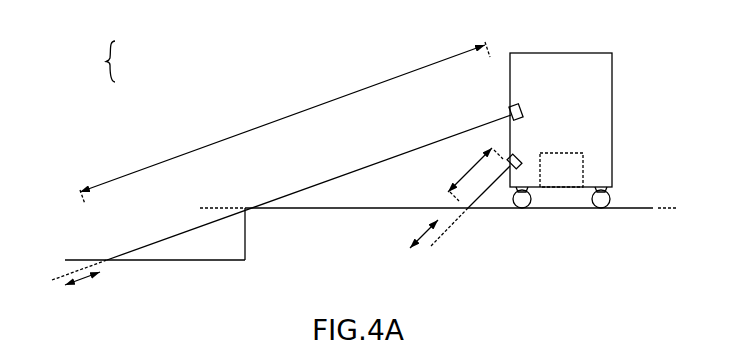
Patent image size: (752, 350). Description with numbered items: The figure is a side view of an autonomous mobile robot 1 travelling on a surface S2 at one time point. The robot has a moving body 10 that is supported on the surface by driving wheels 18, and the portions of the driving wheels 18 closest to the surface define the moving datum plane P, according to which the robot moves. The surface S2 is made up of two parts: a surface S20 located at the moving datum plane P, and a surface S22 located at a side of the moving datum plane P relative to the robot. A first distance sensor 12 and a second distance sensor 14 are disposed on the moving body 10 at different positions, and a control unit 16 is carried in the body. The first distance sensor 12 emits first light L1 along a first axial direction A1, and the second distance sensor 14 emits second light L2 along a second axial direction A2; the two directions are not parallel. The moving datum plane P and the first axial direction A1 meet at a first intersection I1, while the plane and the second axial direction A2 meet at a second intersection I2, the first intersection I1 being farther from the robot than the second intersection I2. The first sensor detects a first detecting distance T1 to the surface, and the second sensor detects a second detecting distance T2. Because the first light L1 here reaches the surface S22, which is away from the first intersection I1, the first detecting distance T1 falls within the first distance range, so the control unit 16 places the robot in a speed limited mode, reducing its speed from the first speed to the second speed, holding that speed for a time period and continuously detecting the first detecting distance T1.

The autonomous mobile robot 1 is at (582, 130).
The moving body 10 is at (612, 62).
The first distance sensor 12 is at (522, 111).
The second distance sensor 14 is at (522, 163).
The control unit 16 is at (583, 157).
The driving wheels 18 is at (603, 210).
The surface S2 is at (114, 61).
The surface S20 is at (633, 210).
The surface S22 is at (207, 260).
The moving datum plane P is at (662, 210).
The first detecting distance T1 is at (285, 123).
The second detecting distance T2 is at (475, 174).
The first light L1 is at (373, 163).
The second light L2 is at (498, 195).
The first intersection I1 is at (247, 210).
The second intersection I2 is at (464, 213).
The first axial direction A1 is at (79, 280).
The second axial direction A2 is at (418, 232).